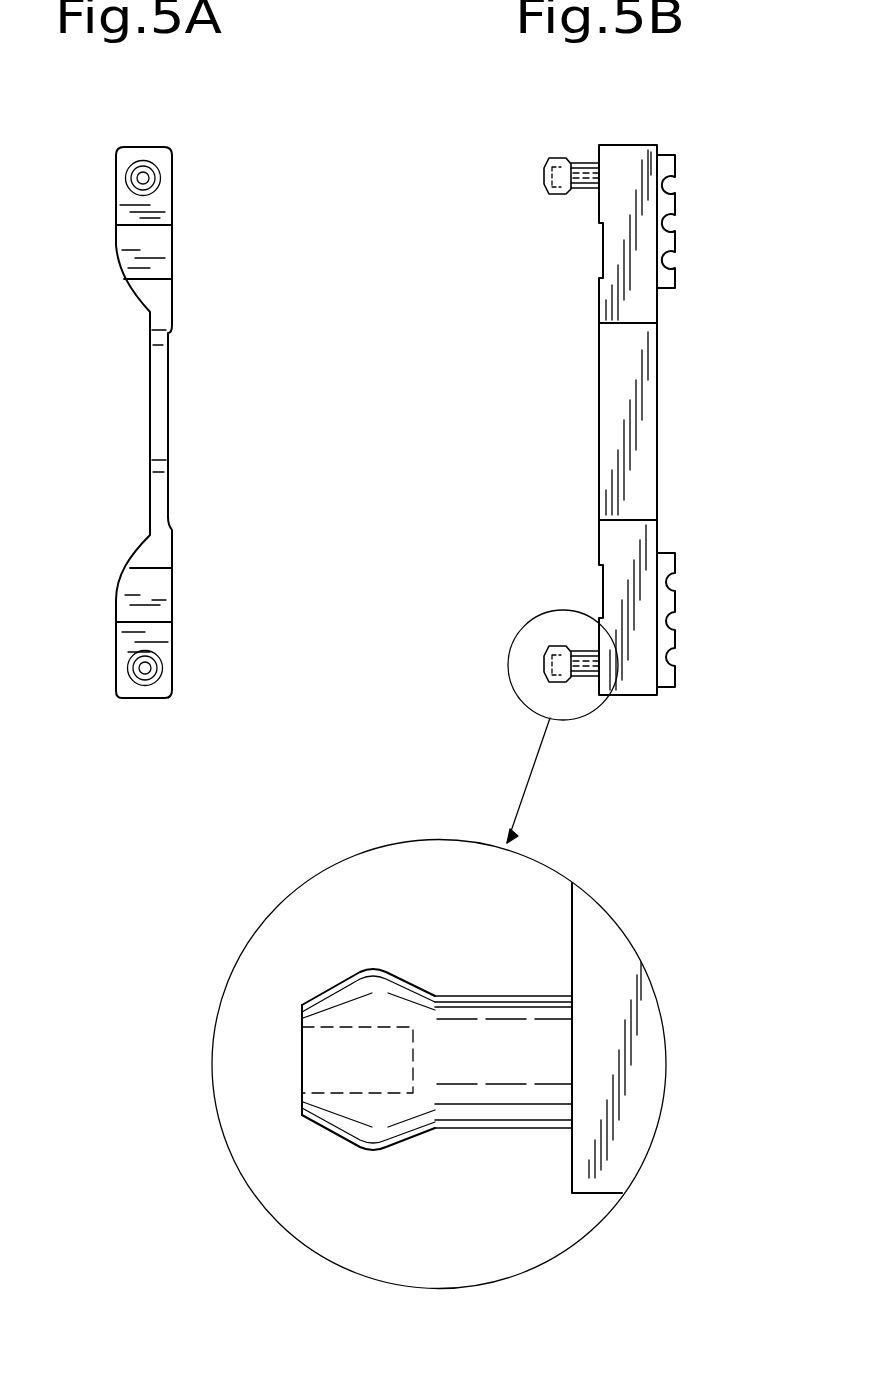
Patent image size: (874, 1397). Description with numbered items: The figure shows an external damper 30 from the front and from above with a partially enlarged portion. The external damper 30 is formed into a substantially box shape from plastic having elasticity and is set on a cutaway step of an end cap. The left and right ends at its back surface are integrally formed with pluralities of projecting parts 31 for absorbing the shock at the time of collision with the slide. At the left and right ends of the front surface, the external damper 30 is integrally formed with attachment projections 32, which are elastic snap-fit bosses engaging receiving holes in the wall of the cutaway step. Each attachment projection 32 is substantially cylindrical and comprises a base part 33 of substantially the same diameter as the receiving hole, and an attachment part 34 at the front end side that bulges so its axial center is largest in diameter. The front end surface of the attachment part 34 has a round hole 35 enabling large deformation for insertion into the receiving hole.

In FIG. 5A, the external damper 30 is at (137, 132).
In FIG. 5B, the external damper 30 is at (637, 137).
In FIG. 5B, the projecting parts 31 is at (677, 269).
In FIG. 5A, the attachment projections 32 is at (160, 175).
In FIG. 5B, the attachment projections 32 is at (558, 158).
In FIG. 5B, the base part 33 is at (474, 1095).
In FIG. 5B, the attachment part 34 is at (376, 1135).
In FIG. 5B, the round hole 35 is at (355, 1024).